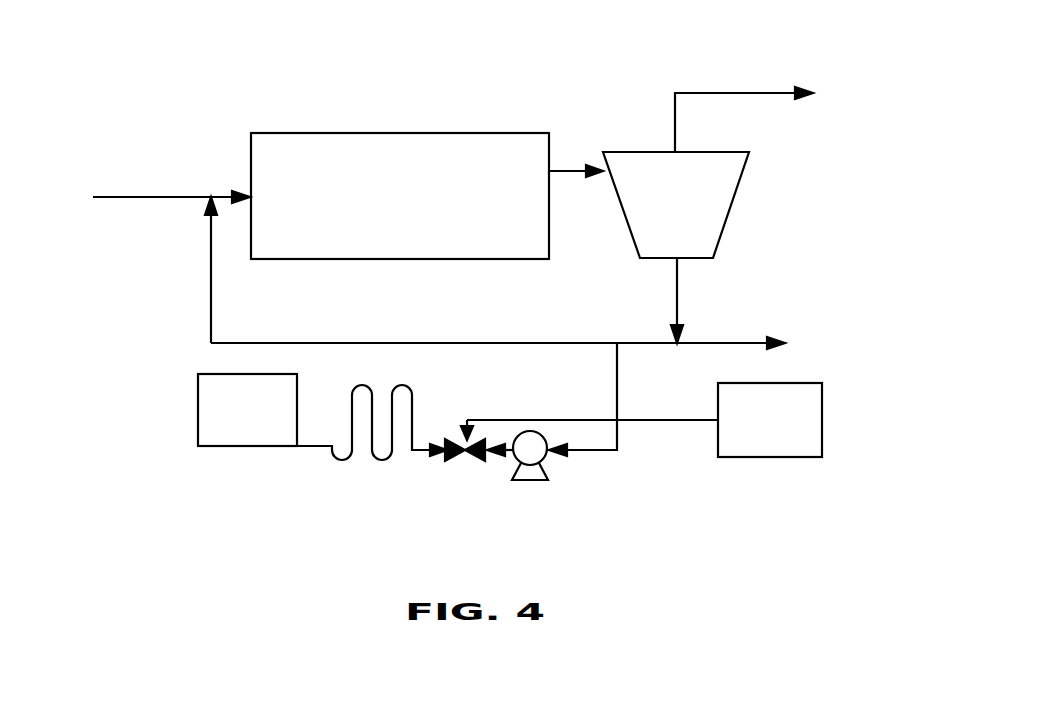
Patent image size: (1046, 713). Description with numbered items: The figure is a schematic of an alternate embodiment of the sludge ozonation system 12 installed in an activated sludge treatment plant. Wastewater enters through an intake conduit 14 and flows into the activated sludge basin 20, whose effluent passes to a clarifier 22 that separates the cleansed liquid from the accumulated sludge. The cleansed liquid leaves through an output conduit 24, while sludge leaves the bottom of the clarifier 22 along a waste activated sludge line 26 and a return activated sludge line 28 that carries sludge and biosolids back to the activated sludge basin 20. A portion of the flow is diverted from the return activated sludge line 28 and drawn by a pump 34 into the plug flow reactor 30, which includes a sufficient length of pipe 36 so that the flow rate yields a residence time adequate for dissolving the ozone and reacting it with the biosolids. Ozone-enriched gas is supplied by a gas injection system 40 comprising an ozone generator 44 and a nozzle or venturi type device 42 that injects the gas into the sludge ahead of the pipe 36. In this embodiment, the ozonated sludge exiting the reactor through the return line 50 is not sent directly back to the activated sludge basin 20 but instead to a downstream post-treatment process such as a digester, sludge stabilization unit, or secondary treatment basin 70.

The sludge ozonation system 12 is at (140, 101).
The intake conduit 14 is at (120, 196).
The activated sludge basin 20 is at (447, 132).
The clarifier 22 is at (722, 202).
The output conduit 24 is at (729, 92).
The waste activated sludge line 26 is at (713, 342).
The return activated sludge line 28 is at (498, 343).
The plug flow reactor 30 is at (457, 393).
The pump 34 is at (537, 481).
The length of pipe 36 is at (360, 383).
The gas injection system 40 is at (666, 450).
The nozzle or venturi type device 42 is at (457, 457).
The ozone generator 44 is at (812, 418).
The return line 50 is at (315, 447).
The secondary treatment basin 70 is at (217, 373).